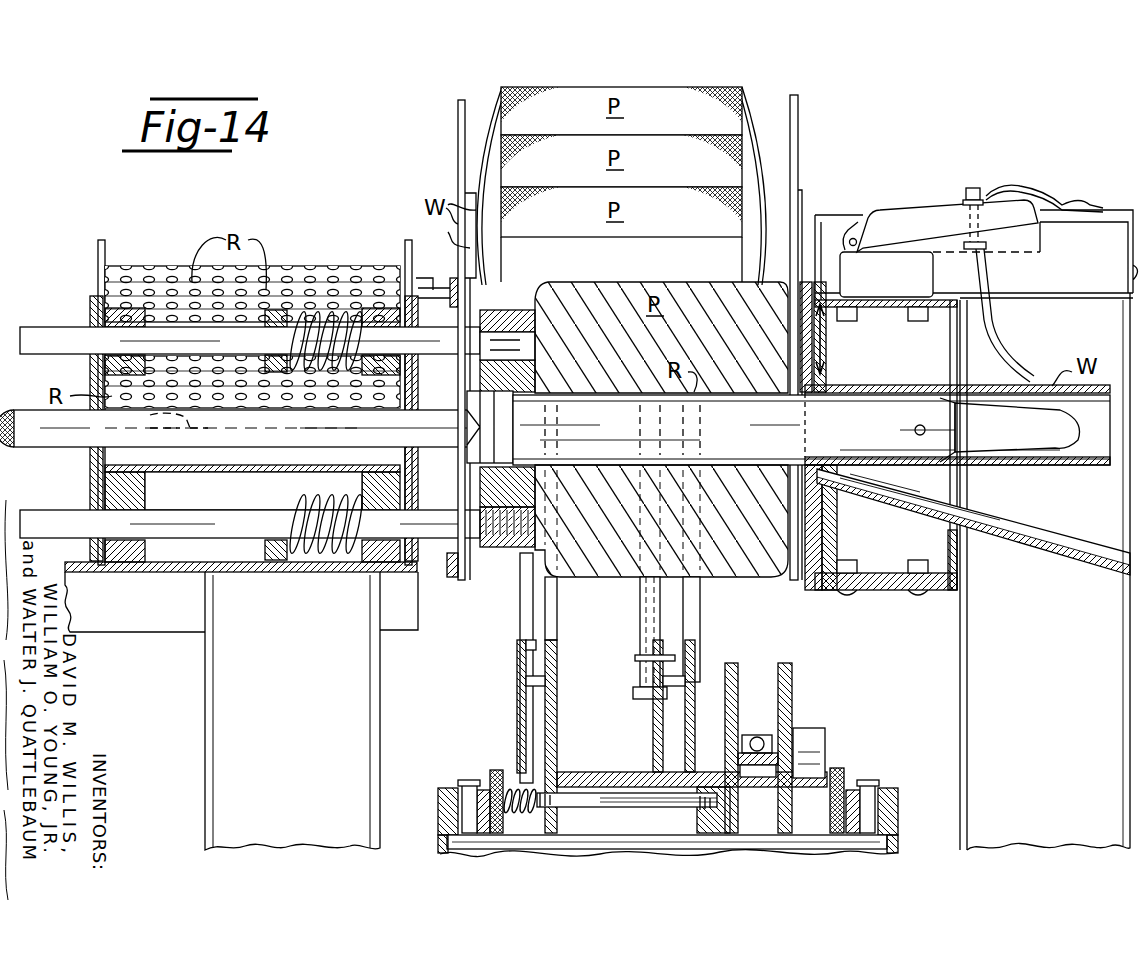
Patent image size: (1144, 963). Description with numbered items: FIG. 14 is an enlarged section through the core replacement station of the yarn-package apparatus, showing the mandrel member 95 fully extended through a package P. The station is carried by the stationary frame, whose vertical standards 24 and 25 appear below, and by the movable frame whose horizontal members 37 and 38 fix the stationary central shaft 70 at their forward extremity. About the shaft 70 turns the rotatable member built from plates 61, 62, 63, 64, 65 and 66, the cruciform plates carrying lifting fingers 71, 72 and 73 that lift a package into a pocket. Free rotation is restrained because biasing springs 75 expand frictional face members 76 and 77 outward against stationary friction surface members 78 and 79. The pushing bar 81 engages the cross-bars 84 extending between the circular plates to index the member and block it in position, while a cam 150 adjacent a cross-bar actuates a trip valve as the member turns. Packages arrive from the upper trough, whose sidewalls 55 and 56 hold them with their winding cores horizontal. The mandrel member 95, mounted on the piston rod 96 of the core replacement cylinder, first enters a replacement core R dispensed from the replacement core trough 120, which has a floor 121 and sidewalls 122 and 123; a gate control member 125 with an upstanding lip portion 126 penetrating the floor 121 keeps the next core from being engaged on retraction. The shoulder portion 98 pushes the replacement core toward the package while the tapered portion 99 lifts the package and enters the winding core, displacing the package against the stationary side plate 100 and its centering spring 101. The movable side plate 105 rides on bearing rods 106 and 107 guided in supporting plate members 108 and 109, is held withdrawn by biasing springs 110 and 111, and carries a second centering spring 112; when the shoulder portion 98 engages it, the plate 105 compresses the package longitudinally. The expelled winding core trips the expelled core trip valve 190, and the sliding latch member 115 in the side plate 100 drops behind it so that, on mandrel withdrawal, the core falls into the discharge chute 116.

The vertical standard 24 is at (305, 778).
The vertical standard 25 is at (1068, 731).
The horizontal member 37 is at (438, 846).
The horizontal member 38 is at (898, 842).
The sidewall 55 is at (458, 122).
The sidewall 56 is at (798, 110).
The plate 61 is at (517, 660).
The plate 62 is at (557, 658).
The plate 63 is at (653, 708).
The plate 64 is at (695, 668).
The circular plate 65 is at (730, 666).
The circular plate 66 is at (786, 664).
The stationary central shaft 70 is at (642, 847).
The lifting finger 71 is at (520, 614).
The lifting finger 72 is at (640, 614).
The lifting finger 73 is at (680, 602).
The biasing spring 75 is at (538, 818).
The frictional face member 76 is at (497, 770).
The frictional face member 77 is at (840, 772).
The stationary friction surface member 78 is at (440, 816).
The stationary friction surface member 79 is at (884, 814).
The pushing bar 81 is at (763, 734).
The cross-bar 84 is at (770, 736).
The mandrel member 95 is at (895, 430).
The piston rod 96 is at (38, 420).
The shoulder portion 98 is at (513, 408).
The tapered portion 99 is at (1016, 441).
The side plate 100 is at (795, 510).
The centering spring 101 is at (800, 350).
The movable side plate 105 is at (535, 487).
The bearing rod 106 is at (58, 330).
The bearing rod 107 is at (58, 520).
The supporting plate member 108 is at (100, 298).
The supporting plate member 109 is at (432, 275).
The biasing spring 110 is at (360, 364).
The biasing spring 111 is at (322, 558).
The second centering spring 112 is at (535, 348).
The sliding latch member 115 is at (800, 318).
The discharge chute 116 is at (1072, 560).
The replacement core trough 120 is at (196, 250).
The floor 121 is at (120, 468).
The sidewall 122 is at (98, 246).
The sidewall 123 is at (405, 232).
The gate control member 125 is at (192, 458).
The lip portion 126 is at (232, 417).
The cam 150 is at (816, 736).
The expelled core trip valve 190 is at (905, 290).